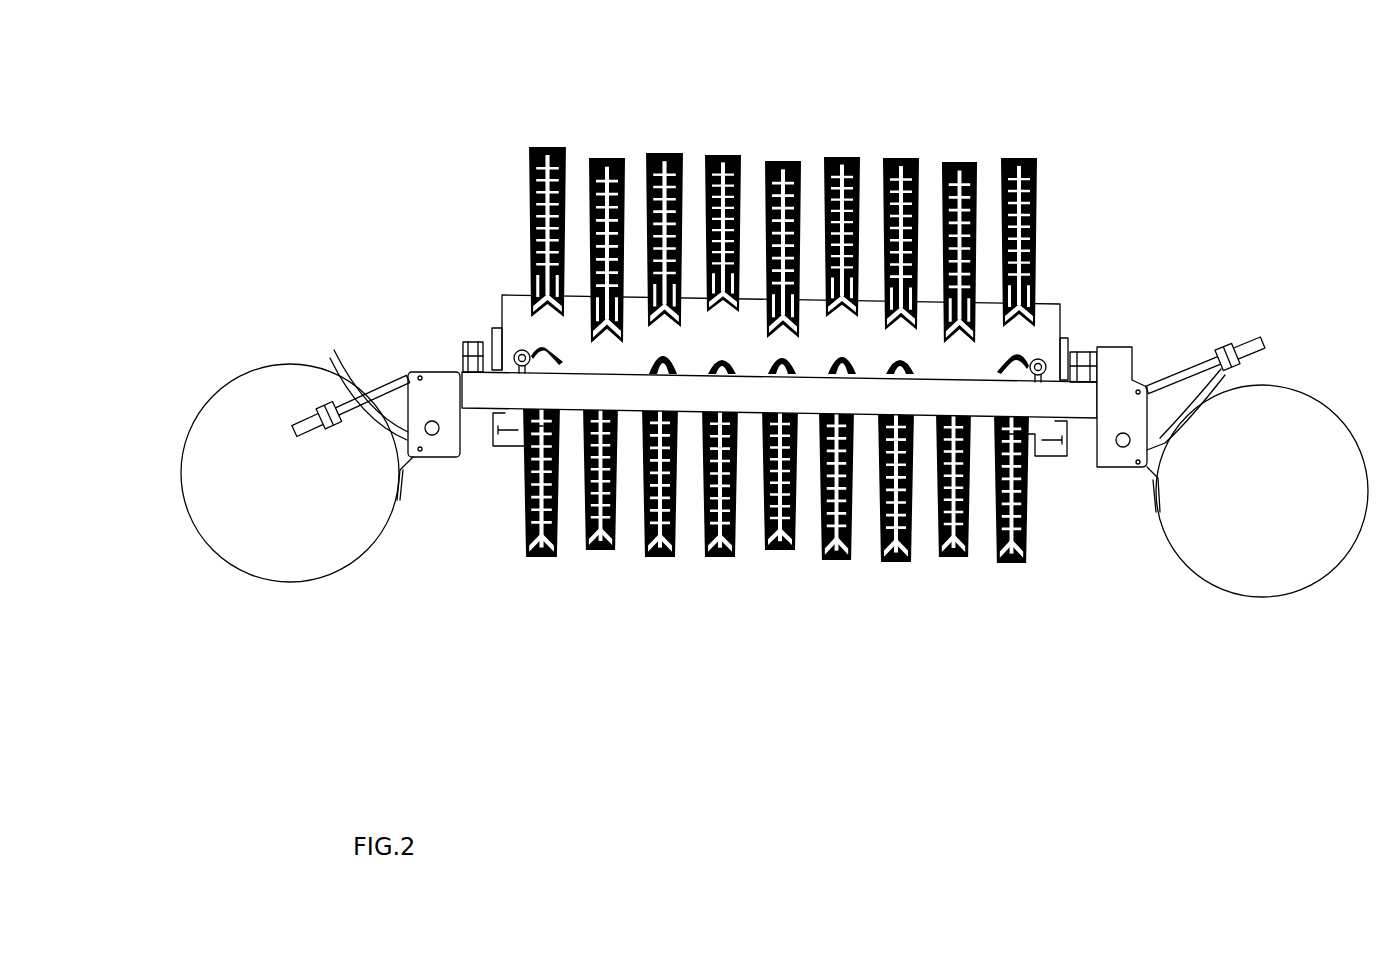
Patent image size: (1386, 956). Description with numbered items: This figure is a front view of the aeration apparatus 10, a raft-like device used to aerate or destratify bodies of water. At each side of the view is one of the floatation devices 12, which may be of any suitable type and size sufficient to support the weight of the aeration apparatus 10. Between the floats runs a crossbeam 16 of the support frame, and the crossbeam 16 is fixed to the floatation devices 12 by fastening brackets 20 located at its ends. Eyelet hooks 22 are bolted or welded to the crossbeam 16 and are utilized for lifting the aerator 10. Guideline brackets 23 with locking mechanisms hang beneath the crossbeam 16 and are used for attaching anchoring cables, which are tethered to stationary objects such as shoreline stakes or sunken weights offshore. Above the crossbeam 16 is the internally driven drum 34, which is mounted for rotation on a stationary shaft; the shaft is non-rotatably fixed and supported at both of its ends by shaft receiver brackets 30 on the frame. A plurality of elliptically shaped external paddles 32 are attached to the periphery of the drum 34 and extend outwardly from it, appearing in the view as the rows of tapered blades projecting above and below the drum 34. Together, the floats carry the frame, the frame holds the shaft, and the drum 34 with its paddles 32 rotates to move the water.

The aeration apparatus 10 is at (1174, 219).
The floatation devices 12 is at (327, 575).
The crossbeams 16 is at (497, 388).
The fastening brackets 20 is at (1152, 372).
The eyelet hooks 22 is at (1040, 357).
The guideline brackets 23 is at (500, 446).
The shaft receiver brackets 30 is at (462, 352).
The external paddles 32 is at (730, 155).
The internally driven drum 34 is at (510, 292).